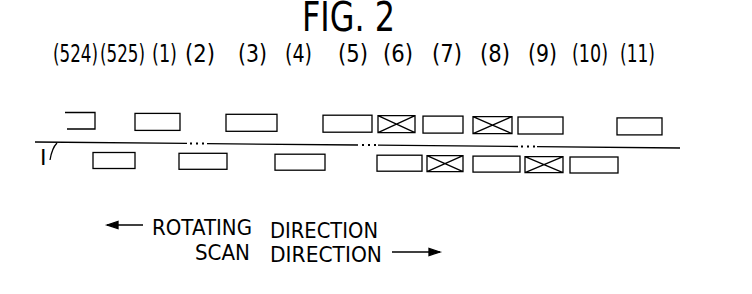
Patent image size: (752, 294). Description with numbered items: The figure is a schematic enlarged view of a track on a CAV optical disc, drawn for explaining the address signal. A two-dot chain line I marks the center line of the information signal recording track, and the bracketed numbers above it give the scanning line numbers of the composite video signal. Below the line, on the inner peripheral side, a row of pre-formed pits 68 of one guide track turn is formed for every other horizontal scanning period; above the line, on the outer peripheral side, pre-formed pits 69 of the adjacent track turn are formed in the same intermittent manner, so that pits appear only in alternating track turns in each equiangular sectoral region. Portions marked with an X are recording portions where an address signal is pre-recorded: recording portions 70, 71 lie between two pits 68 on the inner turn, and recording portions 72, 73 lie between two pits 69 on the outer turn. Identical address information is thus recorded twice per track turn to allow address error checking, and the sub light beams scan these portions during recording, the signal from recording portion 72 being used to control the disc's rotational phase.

The pre-formed pits 68 is at (115, 168).
The pre-formed pits 69 is at (77, 112).
The recording portion 70 is at (445, 172).
The recording portion 71 is at (545, 173).
The recording portion 72 is at (395, 116).
The recording portion 73 is at (492, 116).